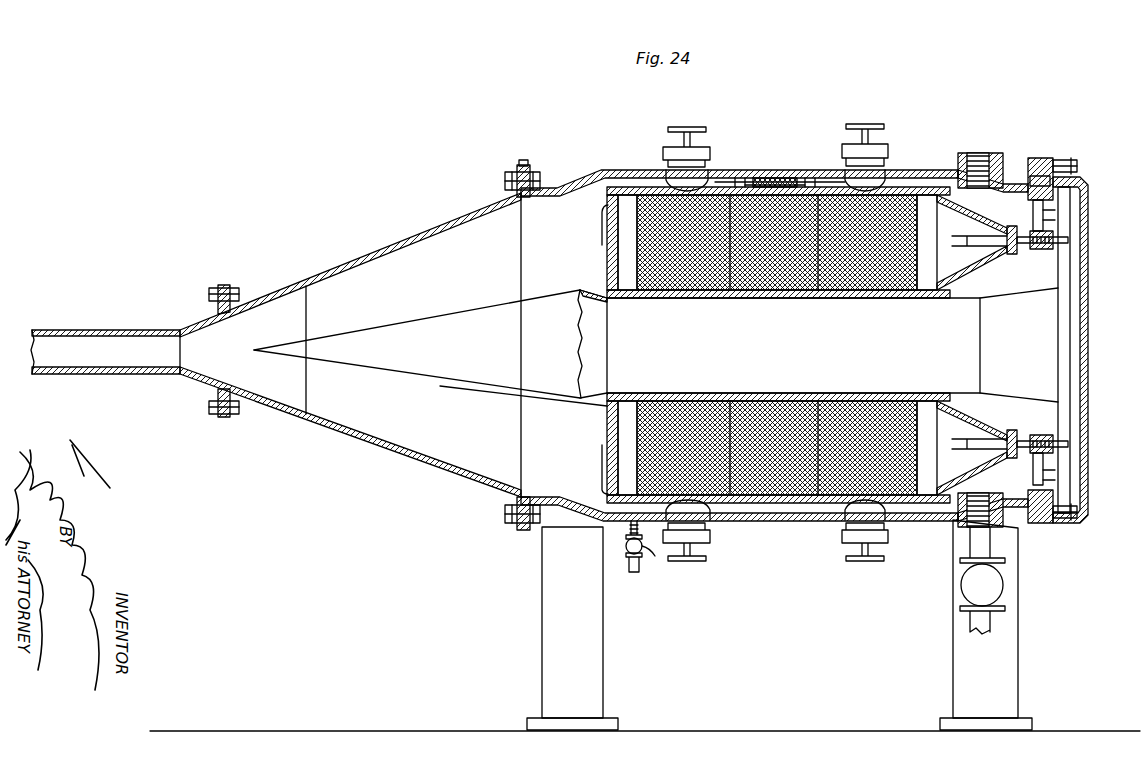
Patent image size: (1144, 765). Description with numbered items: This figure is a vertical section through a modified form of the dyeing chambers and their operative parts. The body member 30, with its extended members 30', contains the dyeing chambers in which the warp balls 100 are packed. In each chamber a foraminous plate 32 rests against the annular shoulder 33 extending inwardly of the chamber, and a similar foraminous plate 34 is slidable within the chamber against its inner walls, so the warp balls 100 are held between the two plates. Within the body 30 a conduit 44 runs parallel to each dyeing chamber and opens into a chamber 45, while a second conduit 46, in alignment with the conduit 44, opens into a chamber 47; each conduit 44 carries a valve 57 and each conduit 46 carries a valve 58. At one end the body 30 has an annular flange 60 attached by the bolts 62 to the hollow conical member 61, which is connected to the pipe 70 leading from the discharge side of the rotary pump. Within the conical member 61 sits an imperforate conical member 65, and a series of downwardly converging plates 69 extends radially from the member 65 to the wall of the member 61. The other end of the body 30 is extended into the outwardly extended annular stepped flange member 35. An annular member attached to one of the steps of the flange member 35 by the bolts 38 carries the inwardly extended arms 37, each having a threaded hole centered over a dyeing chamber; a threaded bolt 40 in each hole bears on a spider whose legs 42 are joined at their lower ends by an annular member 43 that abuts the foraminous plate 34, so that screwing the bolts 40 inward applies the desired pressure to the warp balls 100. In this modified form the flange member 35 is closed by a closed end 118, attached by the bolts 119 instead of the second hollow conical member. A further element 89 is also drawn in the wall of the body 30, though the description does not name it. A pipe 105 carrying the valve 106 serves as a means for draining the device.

The pipe 70 is at (108, 330).
The hollow conical member 61 is at (370, 246).
The downwardly converging plates 69 is at (445, 344).
The imperforate conical member 65 is at (430, 348).
The body member 30 is at (774, 368).
The extended members 30' is at (775, 535).
The bolts 62 is at (505, 180).
The annular flange 60 is at (523, 165).
The valve 57 is at (672, 142).
The valve 58 is at (876, 140).
The pipe 105 is at (636, 572).
The valve 106 is at (655, 556).
The foraminous plate 32 is at (624, 258).
The annular shoulder 33 is at (606, 212).
The chamber 45 is at (556, 247).
The warp balls 100 is at (752, 398).
The foraminous plate 34 is at (930, 298).
The conduit 44 is at (716, 182).
The conduit 46 is at (830, 180).
The spring plug 89 is at (958, 153).
The annular member 43 is at (960, 200).
The legs 42 is at (970, 236).
The threaded bolt 40 is at (1070, 238).
The inwardly extended arms 37 is at (1047, 210).
The chamber 47 is at (1096, 414).
The annular stepped flange member 35 is at (1038, 158).
The bolts 38 is at (1046, 176).
The closed end 118 is at (1088, 272).
The bolts 119 is at (1078, 165).